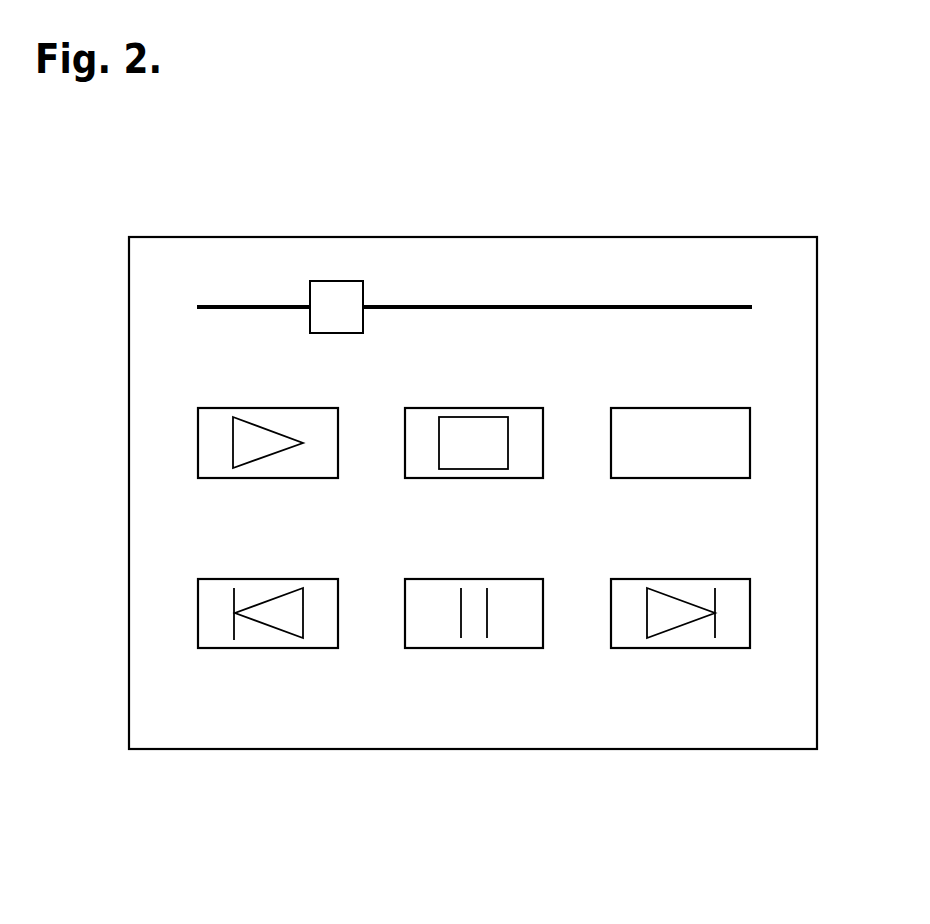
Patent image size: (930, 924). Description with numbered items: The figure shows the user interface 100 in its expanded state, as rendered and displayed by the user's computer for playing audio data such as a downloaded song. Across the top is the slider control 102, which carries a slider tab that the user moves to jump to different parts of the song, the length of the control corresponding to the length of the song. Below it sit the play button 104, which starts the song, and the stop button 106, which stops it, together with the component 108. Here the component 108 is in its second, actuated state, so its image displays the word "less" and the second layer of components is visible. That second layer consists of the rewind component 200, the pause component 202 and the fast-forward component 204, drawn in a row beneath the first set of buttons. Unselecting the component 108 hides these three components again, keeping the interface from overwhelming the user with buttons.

The user interface 100 is at (235, 767).
The slider control 102 is at (372, 290).
The play button 104 is at (262, 478).
The stop button 106 is at (475, 478).
The more button 108 is at (675, 478).
The rewind component 200 is at (262, 648).
The pause component 202 is at (470, 648).
The fast-forward component 204 is at (682, 648).